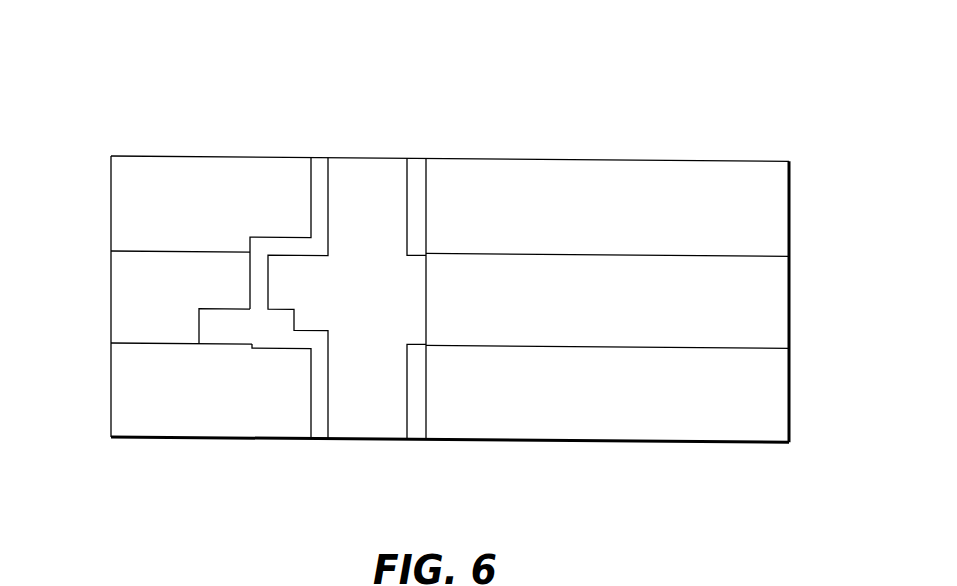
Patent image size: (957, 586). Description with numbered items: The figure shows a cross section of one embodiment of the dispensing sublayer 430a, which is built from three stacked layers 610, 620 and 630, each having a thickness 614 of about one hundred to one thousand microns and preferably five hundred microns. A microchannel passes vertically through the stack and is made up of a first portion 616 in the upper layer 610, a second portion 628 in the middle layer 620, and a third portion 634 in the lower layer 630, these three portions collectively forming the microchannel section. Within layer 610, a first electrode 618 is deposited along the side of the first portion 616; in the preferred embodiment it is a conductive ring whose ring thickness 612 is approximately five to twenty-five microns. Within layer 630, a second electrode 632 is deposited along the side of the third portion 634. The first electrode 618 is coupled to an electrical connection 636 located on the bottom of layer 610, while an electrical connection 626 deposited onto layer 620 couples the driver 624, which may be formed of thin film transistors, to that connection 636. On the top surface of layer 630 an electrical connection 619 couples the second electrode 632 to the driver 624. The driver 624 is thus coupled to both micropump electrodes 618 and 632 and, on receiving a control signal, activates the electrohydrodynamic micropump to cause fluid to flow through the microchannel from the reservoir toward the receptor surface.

The dispensing sublayer 430a is at (246, 90).
The first layer 610 is at (789, 204).
The second layer 620 is at (789, 290).
The third layer 630 is at (789, 384).
The first portion of the microchannel 616 is at (349, 227).
The second portion of the microchannel 628 is at (349, 304).
The third portion of the microchannel 634 is at (349, 431).
The first electrode 618 is at (418, 157).
The second electrode 632 is at (316, 439).
The ring thickness 612 is at (361, 389).
The layer thickness 614 is at (515, 344).
The electrical connection 636 is at (276, 236).
The electrical connection 626 is at (249, 267).
The driver 624 is at (198, 322).
The electrical connection 619 is at (265, 347).